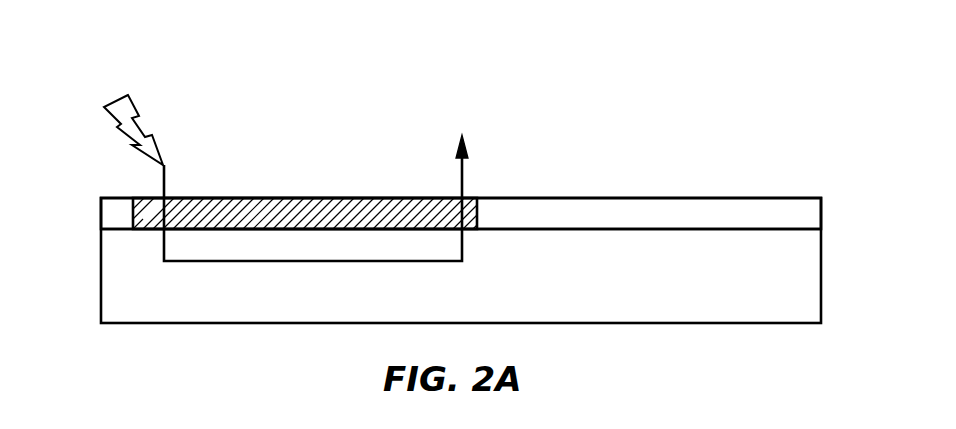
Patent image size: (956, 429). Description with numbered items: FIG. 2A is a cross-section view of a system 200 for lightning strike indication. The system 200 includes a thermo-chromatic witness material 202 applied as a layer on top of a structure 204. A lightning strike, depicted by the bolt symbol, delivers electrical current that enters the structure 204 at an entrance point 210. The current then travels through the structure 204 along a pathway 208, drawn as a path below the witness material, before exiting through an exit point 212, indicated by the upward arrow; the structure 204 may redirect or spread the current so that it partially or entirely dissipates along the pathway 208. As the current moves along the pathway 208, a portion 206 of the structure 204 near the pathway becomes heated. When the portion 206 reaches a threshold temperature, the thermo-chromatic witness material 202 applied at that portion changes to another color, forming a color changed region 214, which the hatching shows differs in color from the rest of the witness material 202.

The system for lightning strike indication 200 is at (163, 88).
The thermo-chromatic witness material 202 is at (117, 198).
The structure 204 is at (101, 256).
The portion of the structure 206 is at (287, 285).
The pathway 208 is at (222, 262).
The entrance point 210 is at (167, 197).
The exit point 212 is at (464, 197).
The color changed region 214 is at (346, 197).